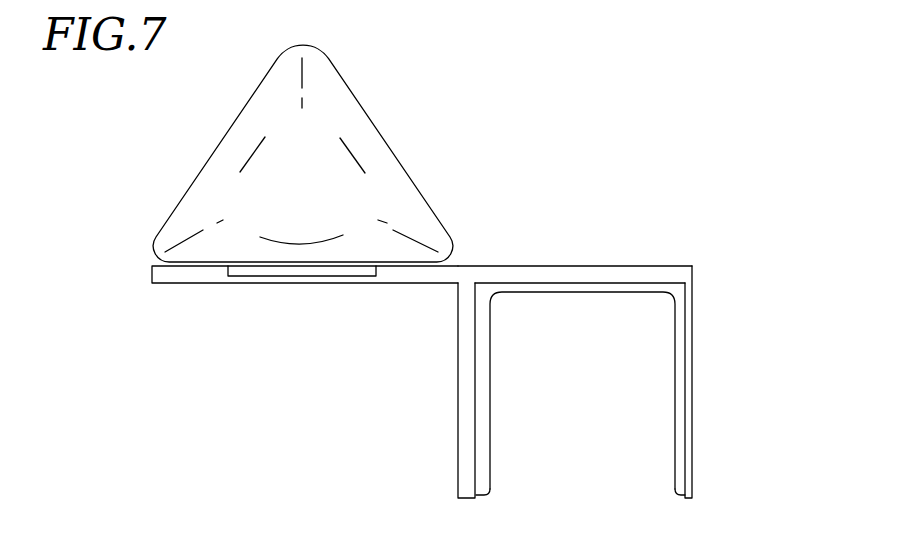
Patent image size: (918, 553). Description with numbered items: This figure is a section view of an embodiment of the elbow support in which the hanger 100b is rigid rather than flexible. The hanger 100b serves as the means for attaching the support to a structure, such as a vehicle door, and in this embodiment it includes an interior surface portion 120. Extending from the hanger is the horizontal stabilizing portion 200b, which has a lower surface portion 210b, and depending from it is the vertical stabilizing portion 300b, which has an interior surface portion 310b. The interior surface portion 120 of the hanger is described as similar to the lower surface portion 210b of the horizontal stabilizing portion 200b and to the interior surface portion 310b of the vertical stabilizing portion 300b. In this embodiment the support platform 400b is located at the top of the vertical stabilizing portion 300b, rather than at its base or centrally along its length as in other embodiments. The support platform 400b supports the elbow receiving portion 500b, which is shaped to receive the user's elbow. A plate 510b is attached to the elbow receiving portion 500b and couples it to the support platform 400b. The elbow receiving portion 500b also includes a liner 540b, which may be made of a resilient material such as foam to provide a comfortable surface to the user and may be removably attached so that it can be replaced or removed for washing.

The hanger 100b is at (690, 318).
The interior surface portion 120 is at (675, 393).
The horizontal stabilizing portion 200b is at (577, 270).
The lower surface portion 210b is at (613, 287).
The vertical stabilizing portion 300b is at (465, 435).
The interior surface portion 310b is at (482, 465).
The support platform 400b is at (397, 282).
The elbow receiving portion 500b is at (380, 127).
The plate 510b is at (252, 270).
The liner 540b is at (395, 195).